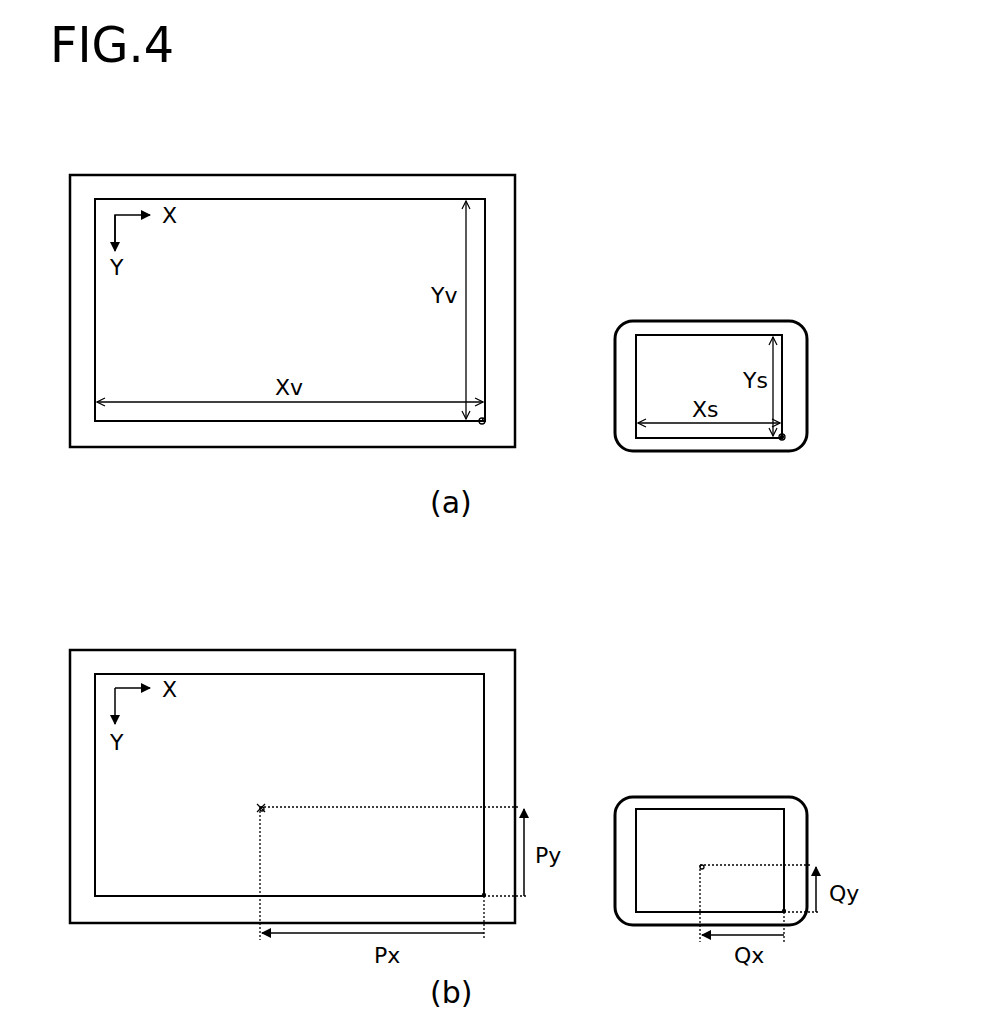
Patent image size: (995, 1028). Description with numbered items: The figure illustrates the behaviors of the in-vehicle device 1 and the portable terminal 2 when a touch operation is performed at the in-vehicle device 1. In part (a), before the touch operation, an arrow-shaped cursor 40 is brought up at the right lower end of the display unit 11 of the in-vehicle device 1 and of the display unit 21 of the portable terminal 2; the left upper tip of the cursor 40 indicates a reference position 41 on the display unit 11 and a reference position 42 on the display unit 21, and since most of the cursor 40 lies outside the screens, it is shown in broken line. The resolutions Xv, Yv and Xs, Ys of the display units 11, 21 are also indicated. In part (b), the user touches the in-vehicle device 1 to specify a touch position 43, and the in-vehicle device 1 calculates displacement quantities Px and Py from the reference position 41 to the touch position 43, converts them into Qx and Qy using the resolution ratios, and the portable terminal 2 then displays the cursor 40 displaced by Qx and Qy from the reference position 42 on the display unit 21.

The in-vehicle device 1 is at (79, 177).
The display unit 11 is at (485, 199).
The portable terminal 2 is at (650, 322).
The display unit 21 is at (782, 335).
The cursor 40 is at (487, 423).
The reference position 41 is at (486, 419).
The reference position 42 is at (786, 436).
The touch position 43 is at (260, 807).